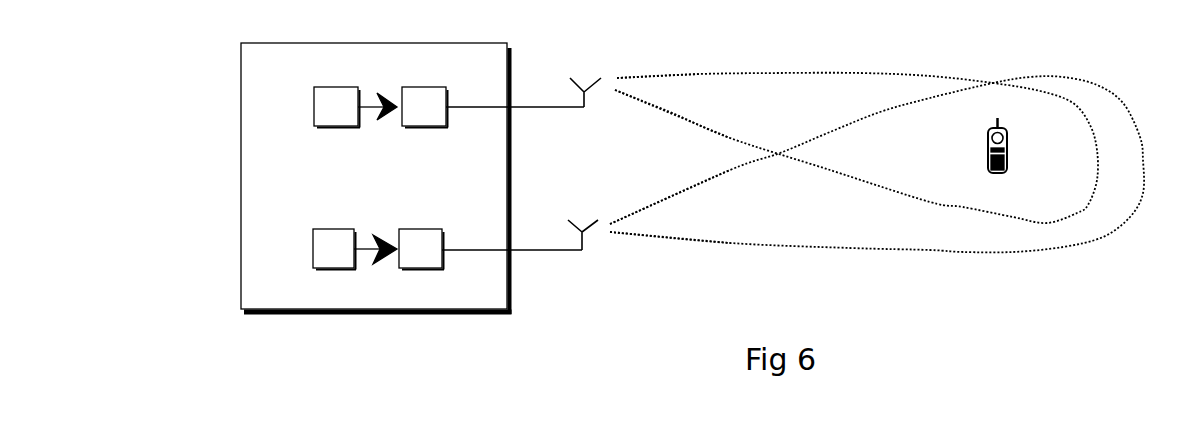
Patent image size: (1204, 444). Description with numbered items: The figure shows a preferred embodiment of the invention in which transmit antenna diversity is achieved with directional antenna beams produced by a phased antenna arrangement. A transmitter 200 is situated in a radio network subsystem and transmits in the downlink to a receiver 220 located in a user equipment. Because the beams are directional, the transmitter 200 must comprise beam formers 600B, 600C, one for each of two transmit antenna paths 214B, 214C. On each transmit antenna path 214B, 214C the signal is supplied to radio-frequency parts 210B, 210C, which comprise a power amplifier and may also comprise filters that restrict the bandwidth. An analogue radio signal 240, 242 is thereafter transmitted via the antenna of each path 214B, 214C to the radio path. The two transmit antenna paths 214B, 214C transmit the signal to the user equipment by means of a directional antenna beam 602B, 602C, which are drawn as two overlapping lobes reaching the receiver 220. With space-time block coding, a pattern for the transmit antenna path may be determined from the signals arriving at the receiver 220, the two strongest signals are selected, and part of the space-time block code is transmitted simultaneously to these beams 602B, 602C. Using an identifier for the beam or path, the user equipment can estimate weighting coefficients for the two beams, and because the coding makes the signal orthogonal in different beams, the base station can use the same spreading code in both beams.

The transmitter 200 is at (298, 43).
The beam former 600B is at (353, 86).
The radio-frequency parts 210B is at (439, 86).
The beam former 600C is at (348, 228).
The radio-frequency parts 210C is at (435, 228).
The transmit antenna path 214B is at (580, 113).
The transmit antenna path 214C is at (577, 253).
The analogue radio signal 240 is at (672, 106).
The analogue radio signal 242 is at (670, 206).
The directional antenna beam 602B is at (830, 72).
The directional antenna beam 602C is at (853, 250).
The receiver 220 is at (1008, 140).